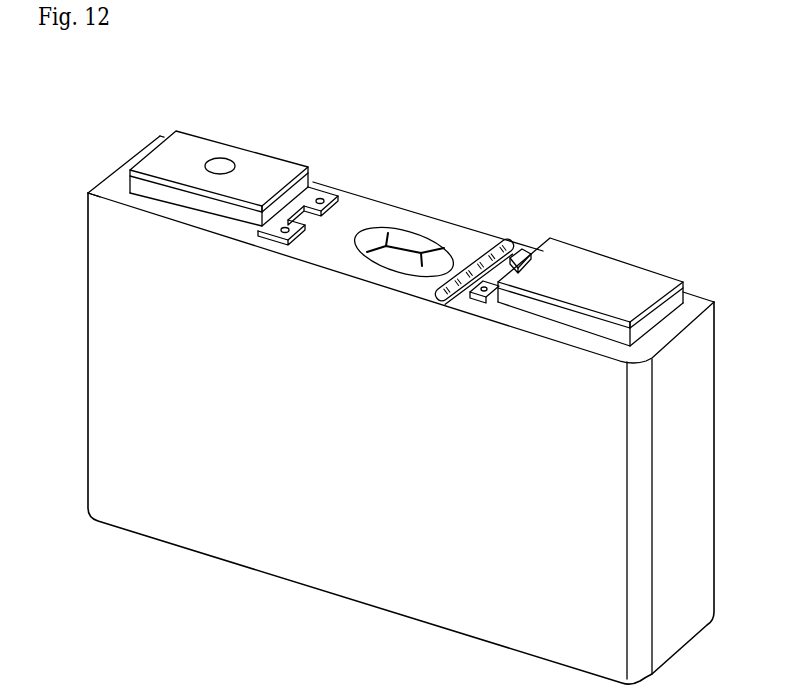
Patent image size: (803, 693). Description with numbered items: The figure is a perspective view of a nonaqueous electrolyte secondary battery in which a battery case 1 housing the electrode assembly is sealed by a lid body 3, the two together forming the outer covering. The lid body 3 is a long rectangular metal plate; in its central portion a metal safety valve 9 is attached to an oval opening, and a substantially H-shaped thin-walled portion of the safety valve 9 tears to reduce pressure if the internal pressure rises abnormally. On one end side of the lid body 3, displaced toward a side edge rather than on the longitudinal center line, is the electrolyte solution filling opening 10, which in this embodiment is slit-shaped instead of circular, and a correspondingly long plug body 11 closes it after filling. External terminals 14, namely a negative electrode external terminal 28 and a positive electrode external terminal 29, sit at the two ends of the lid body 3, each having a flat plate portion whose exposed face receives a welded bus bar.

The battery case 1 is at (380, 557).
The lid body 3 is at (357, 200).
The safety valve 9 is at (417, 240).
The electrolyte solution filling opening 10 is at (503, 237).
The plug body 11 is at (505, 237).
The external terminals 14 is at (406, 201).
The negative electrode external terminal 28 is at (205, 150).
The positive electrode external terminal 29 is at (560, 253).